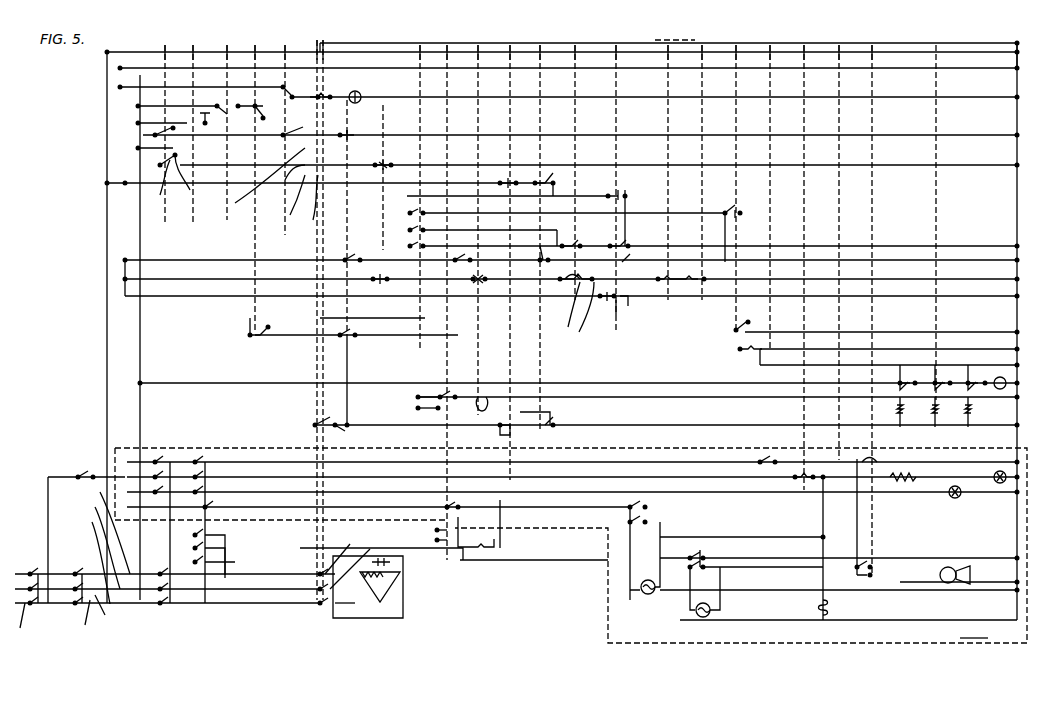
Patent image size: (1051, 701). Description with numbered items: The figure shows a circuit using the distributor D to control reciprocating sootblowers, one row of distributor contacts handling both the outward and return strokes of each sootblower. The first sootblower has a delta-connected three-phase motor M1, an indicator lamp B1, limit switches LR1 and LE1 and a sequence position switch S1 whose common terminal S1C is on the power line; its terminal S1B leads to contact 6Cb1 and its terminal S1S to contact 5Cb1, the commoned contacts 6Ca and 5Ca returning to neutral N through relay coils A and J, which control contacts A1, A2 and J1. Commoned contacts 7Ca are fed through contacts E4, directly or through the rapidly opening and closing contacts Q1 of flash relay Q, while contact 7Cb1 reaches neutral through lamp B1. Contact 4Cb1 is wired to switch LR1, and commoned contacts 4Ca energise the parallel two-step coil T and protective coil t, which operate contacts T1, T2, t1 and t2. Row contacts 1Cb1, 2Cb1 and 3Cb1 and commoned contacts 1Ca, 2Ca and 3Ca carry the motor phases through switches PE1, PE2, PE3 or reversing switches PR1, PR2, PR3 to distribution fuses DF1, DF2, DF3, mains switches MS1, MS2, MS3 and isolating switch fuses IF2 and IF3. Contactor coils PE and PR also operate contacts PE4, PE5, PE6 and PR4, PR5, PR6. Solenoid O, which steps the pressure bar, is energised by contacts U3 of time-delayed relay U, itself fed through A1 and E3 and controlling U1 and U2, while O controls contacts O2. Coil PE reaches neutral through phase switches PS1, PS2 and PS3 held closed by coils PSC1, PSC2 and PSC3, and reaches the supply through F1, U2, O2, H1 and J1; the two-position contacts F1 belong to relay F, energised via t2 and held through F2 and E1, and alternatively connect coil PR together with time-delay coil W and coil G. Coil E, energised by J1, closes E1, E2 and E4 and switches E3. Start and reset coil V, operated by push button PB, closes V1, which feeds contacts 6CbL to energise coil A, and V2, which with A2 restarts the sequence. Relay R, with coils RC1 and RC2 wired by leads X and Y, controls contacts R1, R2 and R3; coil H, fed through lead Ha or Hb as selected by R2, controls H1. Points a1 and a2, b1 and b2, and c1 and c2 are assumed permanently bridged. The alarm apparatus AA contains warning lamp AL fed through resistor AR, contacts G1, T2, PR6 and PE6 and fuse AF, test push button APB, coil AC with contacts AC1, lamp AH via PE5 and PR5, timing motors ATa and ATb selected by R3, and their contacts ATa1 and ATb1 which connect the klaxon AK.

The push button switch PB is at (179, 43).
The flash-relay Q is at (527, 333).
The start and reset relay coil V is at (256, 43).
The relay coil E is at (478, 43).
The distributor D is at (318, 41).
The relay R is at (446, 43).
The relay coil H is at (483, 224).
The two-step relay coil T is at (509, 43).
The protective relay coil t is at (538, 43).
The solenoid O is at (637, 43).
The time-delayed relay U is at (610, 43).
The relay coil F is at (734, 43).
The time-delayed relay coil W is at (769, 43).
The coil G is at (802, 43).
The main power contactor coil PE is at (835, 43).
The main power contactor coil PR is at (871, 43).
The neutral N is at (1008, 48).
The contacts E4 is at (290, 85).
The distributor contact 7Cb1 is at (333, 85).
The indicator lamp B1 is at (361, 93).
The commoned contacts 7Ca is at (298, 123).
The commoned contacts 6Ca is at (343, 124).
The relay coil A is at (355, 133).
The contacts V1 is at (267, 119).
The limit switch LE1 is at (195, 135).
The switch terminal S1B is at (157, 133).
The common terminal S1C is at (158, 162).
The sequence position switch S1 is at (159, 181).
The switch terminal S1S is at (195, 179).
The distributor contact 6Cb1 is at (255, 182).
The distributor contacts 6CbL is at (280, 185).
The distributor contact 5Cb1 is at (283, 205).
The commoned contacts 5Ca is at (300, 213).
The relay coil J is at (383, 158).
The contacts E1 is at (408, 210).
The contacts E2 is at (408, 227).
The contacts E3 is at (409, 239).
The contacts A1 is at (361, 250).
The contacts R1 is at (465, 255).
The contacts t2 is at (531, 246).
The contacts T1 is at (505, 178).
The contacts t1 is at (546, 166).
The contacts U1 is at (623, 210).
The contacts Q1 is at (405, 176).
The contact U2 is at (622, 262).
The circuit point a2 is at (579, 264).
The contacts F2 is at (741, 204).
The contacts J1 is at (380, 286).
The contacts H1 is at (487, 287).
The contacts O2 is at (572, 282).
The circuit point a1 is at (565, 312).
The circuit point b1 is at (574, 320).
The circuit point b2 is at (604, 310).
The circuit point c1 is at (633, 296).
The contacts U3 is at (616, 315).
The circuit point c2 is at (658, 296).
The two-position contacts F1 is at (739, 343).
The contacts V2 is at (259, 338).
The contacts A2 is at (358, 333).
The contacts R2 is at (452, 392).
The lead Ha is at (415, 395).
The lead Hb is at (417, 409).
The distributor contact 4Cb1 is at (311, 415).
The commoned contacts 4Ca is at (351, 435).
The contacts T2 is at (550, 435).
The phase switch PS1 is at (905, 350).
The phase switch PS2 is at (940, 350).
The phase switch PS3 is at (978, 350).
The coil PSC1 is at (895, 410).
The coil PSC2 is at (935, 427).
The coil PSC3 is at (986, 412).
The coil AC is at (867, 443).
The warning lamp AL is at (1000, 470).
The test push button APB is at (765, 457).
The contacts G1 is at (806, 485).
The voltage dropping resistor AR is at (908, 480).
The lamp AH is at (955, 502).
The contacts R3 is at (450, 505).
The lead Y is at (433, 526).
The lead X is at (433, 545).
The relay coil RC2 is at (475, 540).
The relay coil RC1 is at (458, 556).
The limit switch LR1 is at (399, 566).
The motor M1 is at (403, 595).
The distributor contact 3Cb1 is at (344, 547).
The distributor contact 2Cb1 is at (370, 555).
The commoned contacts 3Ca is at (298, 600).
The commoned contacts 1Ca is at (335, 610).
The commoned contacts 2Ca is at (320, 590).
The distributor contact 1Cb1 is at (345, 608).
The contacts ATa1 is at (658, 513).
The synchronous timing motor ATa is at (642, 567).
The contacts ATb1 is at (717, 554).
The synchronous timing motor ATb is at (703, 602).
The contacts AC1 is at (883, 571).
The audible warning Klaxon AK is at (966, 570).
The alarm apparatus AA is at (972, 631).
The contacts PE4 is at (155, 462).
The contacts PE5 is at (155, 477).
The contacts PE6 is at (158, 492).
The contacts PR6 is at (225, 448).
The contacts PR5 is at (207, 477).
The contacts PR4 is at (223, 498).
The fuse AF is at (87, 468).
The distribution fuse DF3 is at (96, 529).
The distribution fuse DF2 is at (91, 543).
The distribution fuse DF1 is at (86, 558).
The isolating switch fuse IF3 is at (25, 623).
The isolating switch fuse IF2 is at (30, 625).
The mains switch MS3 is at (73, 573).
The mains switch MS1 is at (112, 613).
The mains switch MS2 is at (87, 624).
The switch PE1 is at (165, 580).
The switch PE2 is at (175, 592).
The switch PE3 is at (185, 580).
The switch PR2 is at (210, 540).
The switch PR1 is at (210, 552).
The switch PR3 is at (235, 562).